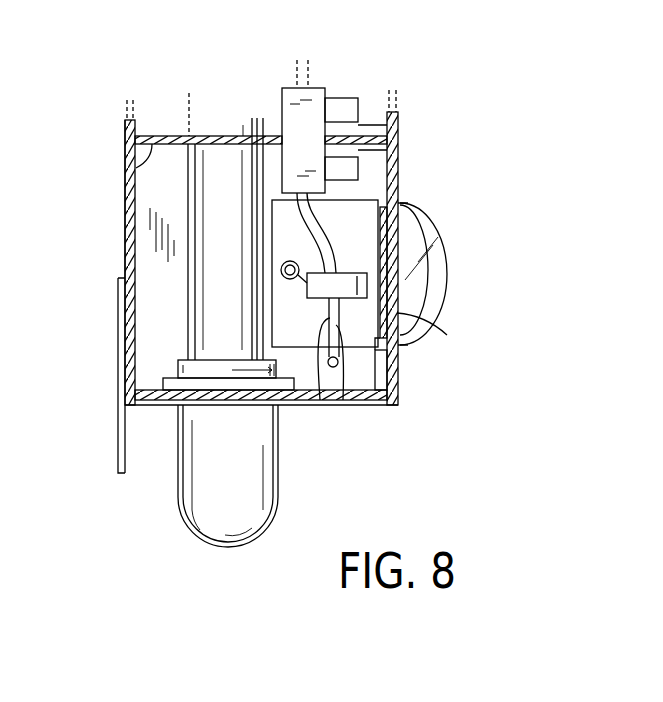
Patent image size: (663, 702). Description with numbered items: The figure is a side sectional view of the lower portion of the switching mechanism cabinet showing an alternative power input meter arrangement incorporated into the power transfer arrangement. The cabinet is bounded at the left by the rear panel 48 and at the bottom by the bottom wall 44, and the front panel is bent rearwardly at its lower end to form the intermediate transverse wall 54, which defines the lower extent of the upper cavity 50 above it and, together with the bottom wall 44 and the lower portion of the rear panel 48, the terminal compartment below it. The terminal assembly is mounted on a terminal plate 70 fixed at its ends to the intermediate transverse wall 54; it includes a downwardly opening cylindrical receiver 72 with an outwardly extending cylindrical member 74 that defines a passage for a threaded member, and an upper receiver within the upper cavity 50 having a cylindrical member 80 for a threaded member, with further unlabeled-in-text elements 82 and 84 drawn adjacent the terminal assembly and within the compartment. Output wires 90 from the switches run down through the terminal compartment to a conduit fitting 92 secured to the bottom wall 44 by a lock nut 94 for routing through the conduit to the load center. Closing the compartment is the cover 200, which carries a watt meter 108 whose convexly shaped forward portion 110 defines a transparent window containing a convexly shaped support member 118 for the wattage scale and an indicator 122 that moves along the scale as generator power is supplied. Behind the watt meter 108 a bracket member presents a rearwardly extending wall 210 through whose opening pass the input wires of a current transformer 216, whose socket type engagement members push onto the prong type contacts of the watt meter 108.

The bottom wall 44 is at (150, 407).
The rear panel 48 is at (127, 235).
The upper cavity 50 is at (143, 124).
The intermediate transverse wall 54 is at (142, 152).
The terminal plate 70 is at (282, 92).
The cylindrical receiver 72 is at (277, 182).
The cylindrical member 74 is at (378, 170).
The cylindrical member 80 is at (362, 108).
The connector pins 82 is at (310, 84).
The sensor module 84 is at (353, 318).
The output wires 90 is at (207, 348).
The conduit fitting 92 is at (242, 512).
The lock nut 94 is at (315, 405).
The watt meter 108 is at (462, 218).
The forward portion 110 is at (397, 300).
The support member 118 is at (447, 300).
The indicator 122 is at (418, 290).
The cover 200 is at (428, 183).
The rearwardly extending wall 210 is at (380, 355).
The current transformer 216 is at (383, 372).